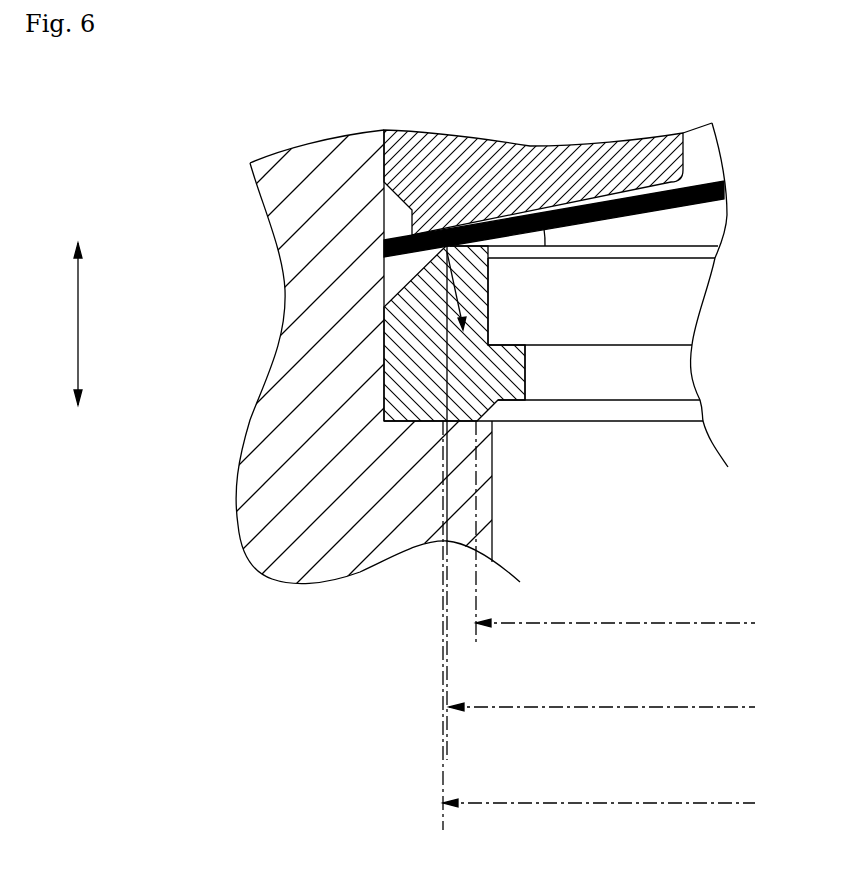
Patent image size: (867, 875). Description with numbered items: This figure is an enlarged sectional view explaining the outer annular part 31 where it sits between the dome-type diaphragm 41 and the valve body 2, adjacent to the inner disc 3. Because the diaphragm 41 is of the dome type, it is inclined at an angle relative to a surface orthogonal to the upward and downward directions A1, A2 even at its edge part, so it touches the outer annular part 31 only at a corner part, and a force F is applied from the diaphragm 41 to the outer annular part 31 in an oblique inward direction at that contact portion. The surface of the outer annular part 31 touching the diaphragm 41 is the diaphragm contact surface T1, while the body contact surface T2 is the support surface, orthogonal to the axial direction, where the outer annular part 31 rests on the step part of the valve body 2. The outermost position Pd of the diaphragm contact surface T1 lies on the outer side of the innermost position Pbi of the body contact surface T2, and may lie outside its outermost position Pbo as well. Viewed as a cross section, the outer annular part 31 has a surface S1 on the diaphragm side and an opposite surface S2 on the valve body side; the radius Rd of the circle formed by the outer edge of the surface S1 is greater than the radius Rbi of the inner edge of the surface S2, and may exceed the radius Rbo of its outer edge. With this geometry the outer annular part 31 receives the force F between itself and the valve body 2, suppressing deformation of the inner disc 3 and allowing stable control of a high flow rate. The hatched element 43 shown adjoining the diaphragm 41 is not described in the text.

The valve body 2 is at (300, 221).
The inner disc 3 is at (700, 246).
The outer annular part 31 is at (418, 372).
The diaphragm 41 is at (698, 182).
The elastic body 43 is at (575, 170).
The surface on the diaphragm side S1 is at (483, 236).
The diaphragm contact surface T1 is at (441, 249).
The surface on the valve body side S2 is at (562, 442).
The body contact surface T2 is at (465, 421).
The force F is at (458, 268).
The upward direction A1 is at (82, 312).
The downward direction A2 is at (82, 431).
The radius of inner edge of valve-body-side surface Rbi is at (615, 610).
The radius of outer edge of valve-body-side surface Rbo is at (602, 695).
The radius of outer edge of diaphragm-side surface Rd is at (599, 793).
The innermost position of body contact surface Pbi is at (484, 552).
The outermost position of body contact surface Pbo is at (469, 503).
The outermost position of diaphragm contact surface Pd is at (443, 641).